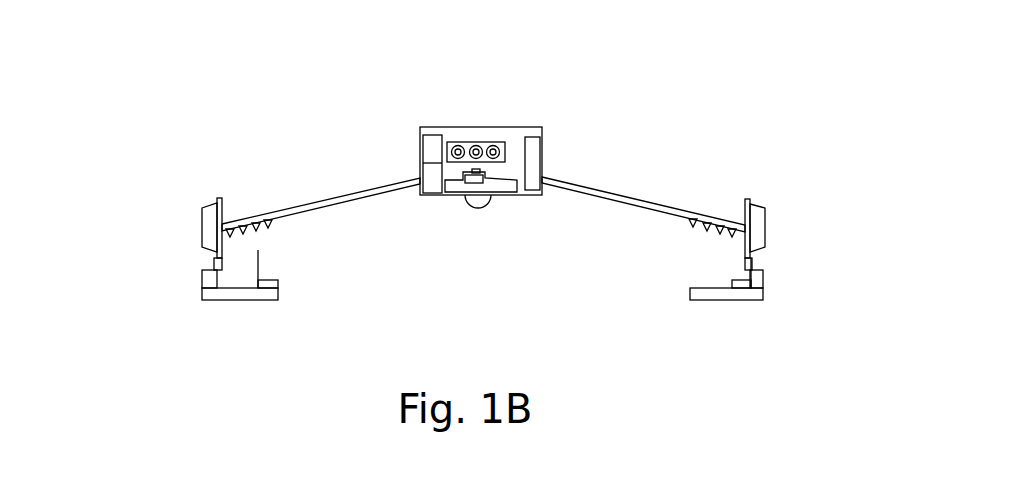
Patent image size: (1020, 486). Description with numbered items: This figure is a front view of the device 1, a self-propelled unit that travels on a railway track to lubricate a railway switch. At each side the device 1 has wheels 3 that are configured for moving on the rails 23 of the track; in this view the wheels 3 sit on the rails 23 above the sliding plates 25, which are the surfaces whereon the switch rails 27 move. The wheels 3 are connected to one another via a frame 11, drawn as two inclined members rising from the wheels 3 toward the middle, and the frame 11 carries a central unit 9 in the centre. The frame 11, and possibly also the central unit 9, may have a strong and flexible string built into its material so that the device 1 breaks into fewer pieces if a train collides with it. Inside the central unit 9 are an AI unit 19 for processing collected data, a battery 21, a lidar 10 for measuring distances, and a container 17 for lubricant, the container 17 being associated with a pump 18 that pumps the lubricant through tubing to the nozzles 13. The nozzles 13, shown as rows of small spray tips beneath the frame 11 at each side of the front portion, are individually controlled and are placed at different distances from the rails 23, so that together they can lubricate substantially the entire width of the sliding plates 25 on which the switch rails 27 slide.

The device 1 is at (713, 110).
The wheels 3 is at (202, 228).
The central unit 9 is at (375, 105).
The lidar 10 is at (478, 207).
The frame 11 is at (578, 183).
The nozzles 13 is at (232, 190).
The container 17 is at (495, 182).
The pump 18 is at (467, 182).
The AI unit 19 is at (532, 153).
The battery 21 is at (432, 148).
The rails 23 is at (215, 251).
The sliding plates 25 is at (255, 300).
The switch rails 27 is at (260, 267).